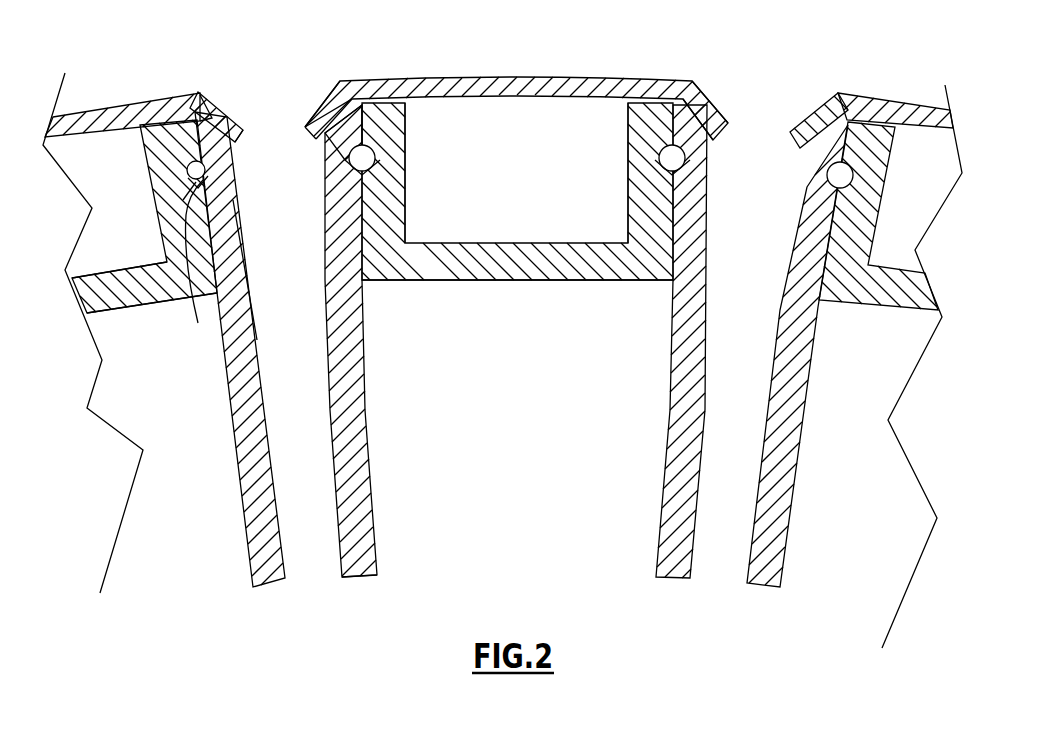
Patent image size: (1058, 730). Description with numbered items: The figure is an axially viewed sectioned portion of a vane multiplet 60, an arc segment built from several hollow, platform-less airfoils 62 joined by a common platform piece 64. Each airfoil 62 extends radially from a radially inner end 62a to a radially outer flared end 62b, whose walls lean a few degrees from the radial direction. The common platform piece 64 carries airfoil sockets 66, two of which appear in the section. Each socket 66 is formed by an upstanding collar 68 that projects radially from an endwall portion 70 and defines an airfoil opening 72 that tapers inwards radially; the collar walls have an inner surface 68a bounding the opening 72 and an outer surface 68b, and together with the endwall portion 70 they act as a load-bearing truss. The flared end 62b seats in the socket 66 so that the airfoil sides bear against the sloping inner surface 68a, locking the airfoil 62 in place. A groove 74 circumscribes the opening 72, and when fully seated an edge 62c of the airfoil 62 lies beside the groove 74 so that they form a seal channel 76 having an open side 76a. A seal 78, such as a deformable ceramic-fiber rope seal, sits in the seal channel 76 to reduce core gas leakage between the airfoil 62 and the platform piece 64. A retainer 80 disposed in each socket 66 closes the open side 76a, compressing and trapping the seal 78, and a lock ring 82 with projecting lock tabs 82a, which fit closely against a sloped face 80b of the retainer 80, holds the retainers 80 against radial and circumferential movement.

The vane multiplet 60 is at (119, 470).
The airfoil 62 is at (360, 424).
The radially inner end 62a is at (391, 557).
The flared end 62b is at (249, 207).
The edge 62c is at (200, 178).
The common platform piece 64 is at (556, 289).
The airfoil socket 66 is at (416, 174).
The upstanding collar 68 is at (148, 152).
The inner surface 68a is at (228, 238).
The outer surface 68b is at (163, 245).
The endwall portion 70 is at (460, 257).
The airfoil opening 72 is at (288, 92).
The groove 74 is at (193, 160).
The seal channel 76 is at (198, 300).
The open side 76a is at (218, 110).
The seal 78 is at (185, 208).
The retainer 80 is at (325, 145).
The sloped face 80b is at (212, 112).
The lock ring 82 is at (450, 80).
The projecting lock tab 82a is at (318, 112).